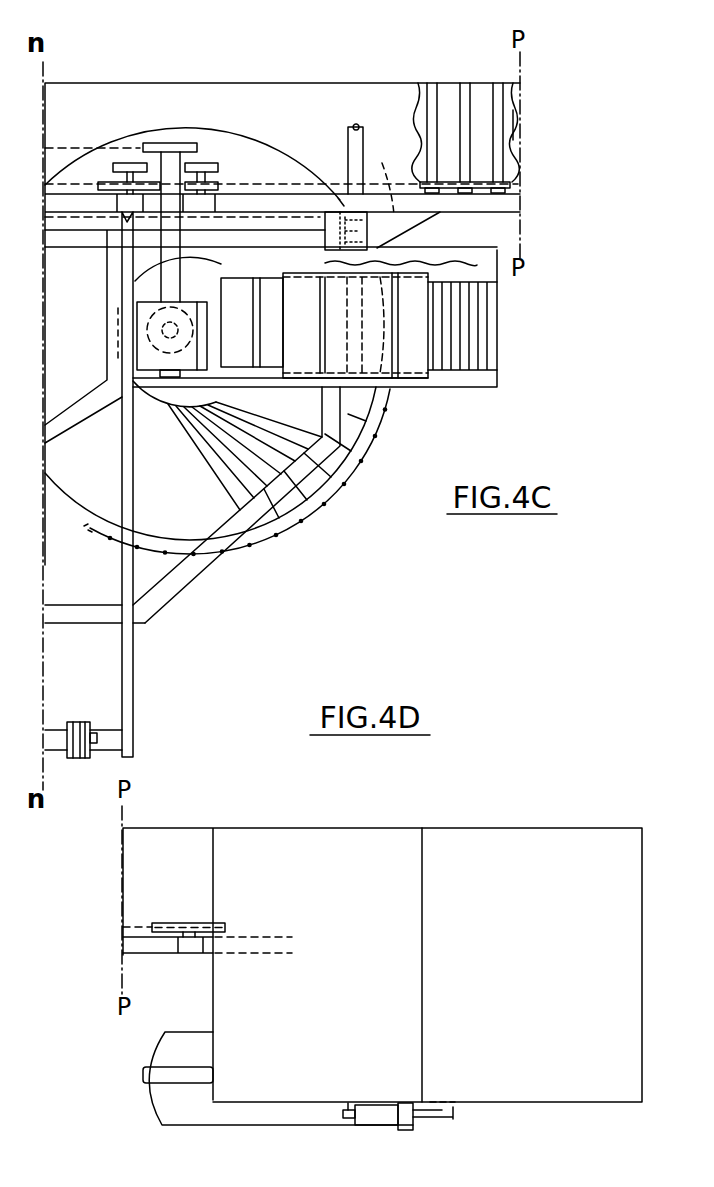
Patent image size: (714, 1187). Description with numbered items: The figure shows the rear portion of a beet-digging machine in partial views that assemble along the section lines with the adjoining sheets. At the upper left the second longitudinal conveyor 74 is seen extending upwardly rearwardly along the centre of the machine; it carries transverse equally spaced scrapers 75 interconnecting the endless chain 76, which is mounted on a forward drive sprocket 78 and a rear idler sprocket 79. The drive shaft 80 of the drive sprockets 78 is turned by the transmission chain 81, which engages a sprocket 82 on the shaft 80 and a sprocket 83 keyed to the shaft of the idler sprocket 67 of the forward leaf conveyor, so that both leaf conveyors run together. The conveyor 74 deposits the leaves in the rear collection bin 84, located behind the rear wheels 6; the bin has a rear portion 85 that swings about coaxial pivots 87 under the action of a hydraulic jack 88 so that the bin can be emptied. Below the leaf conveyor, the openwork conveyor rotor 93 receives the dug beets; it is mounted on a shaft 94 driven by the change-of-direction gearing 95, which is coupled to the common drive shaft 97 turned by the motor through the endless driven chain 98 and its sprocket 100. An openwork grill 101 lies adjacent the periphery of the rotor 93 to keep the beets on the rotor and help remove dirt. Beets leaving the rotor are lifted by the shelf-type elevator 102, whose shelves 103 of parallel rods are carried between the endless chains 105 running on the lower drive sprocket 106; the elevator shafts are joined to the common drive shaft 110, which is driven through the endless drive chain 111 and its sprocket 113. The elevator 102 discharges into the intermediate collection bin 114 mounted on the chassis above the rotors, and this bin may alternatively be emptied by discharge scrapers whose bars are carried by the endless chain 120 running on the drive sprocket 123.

In FIG. 4D, the rear wheels 6 is at (242, 1112).
In FIG. 4C, the idler sprocket 67 is at (113, 178).
In FIG. 4C, the second longitudinal conveyor 74 is at (526, 126).
In FIG. 4D, the second longitudinal conveyor 74 is at (131, 915).
In FIG. 4C, the scrapers 75 is at (470, 107).
In FIG. 4C, the endless chain 76 is at (448, 190).
In FIG. 4C, the forward drive sprocket 78 is at (216, 186).
In FIG. 4D, the rear idler sprocket 79 is at (168, 923).
In FIG. 4C, the drive shaft 80 is at (206, 165).
In FIG. 4C, the transmission chain 81 is at (171, 160).
In FIG. 4C, the sprocket 82 is at (210, 170).
In FIG. 4C, the sprocket 83 is at (122, 163).
In FIG. 4D, the rear collection bin 84 is at (514, 846).
In FIG. 4D, the rear portion 85 is at (593, 842).
In FIG. 4D, the coaxial pivots 87 is at (458, 1106).
In FIG. 4D, the hydraulic jack 88 is at (377, 1112).
In FIG. 4C, the conveyor rotor 93 is at (350, 463).
In FIG. 4C, the shaft 94 is at (140, 328).
In FIG. 4C, the change-of-direction gearing 95 is at (202, 302).
In FIG. 4C, the common drive shaft 97 is at (167, 285).
In FIG. 4C, the endless driven chain 98 is at (62, 148).
In FIG. 4C, the sprocket 100 is at (153, 143).
In FIG. 4C, the openwork grill 101 is at (313, 515).
In FIG. 4C, the elevator 102 is at (490, 406).
In FIG. 4C, the shelf 103 is at (412, 357).
In FIG. 4C, the endless chains 105 is at (300, 273).
In FIG. 4C, the lower drive sprocket 106 is at (388, 373).
In FIG. 4C, the common drive shaft 110 is at (350, 128).
In FIG. 4C, the endless drive chain 111 is at (287, 217).
In FIG. 4C, the sprocket 113 is at (387, 176).
In FIG. 4C, the intermediate collection bin 114 is at (138, 673).
In FIG. 4C, the endless chain 120 is at (97, 737).
In FIG. 4C, the drive sprocket 123 is at (69, 722).